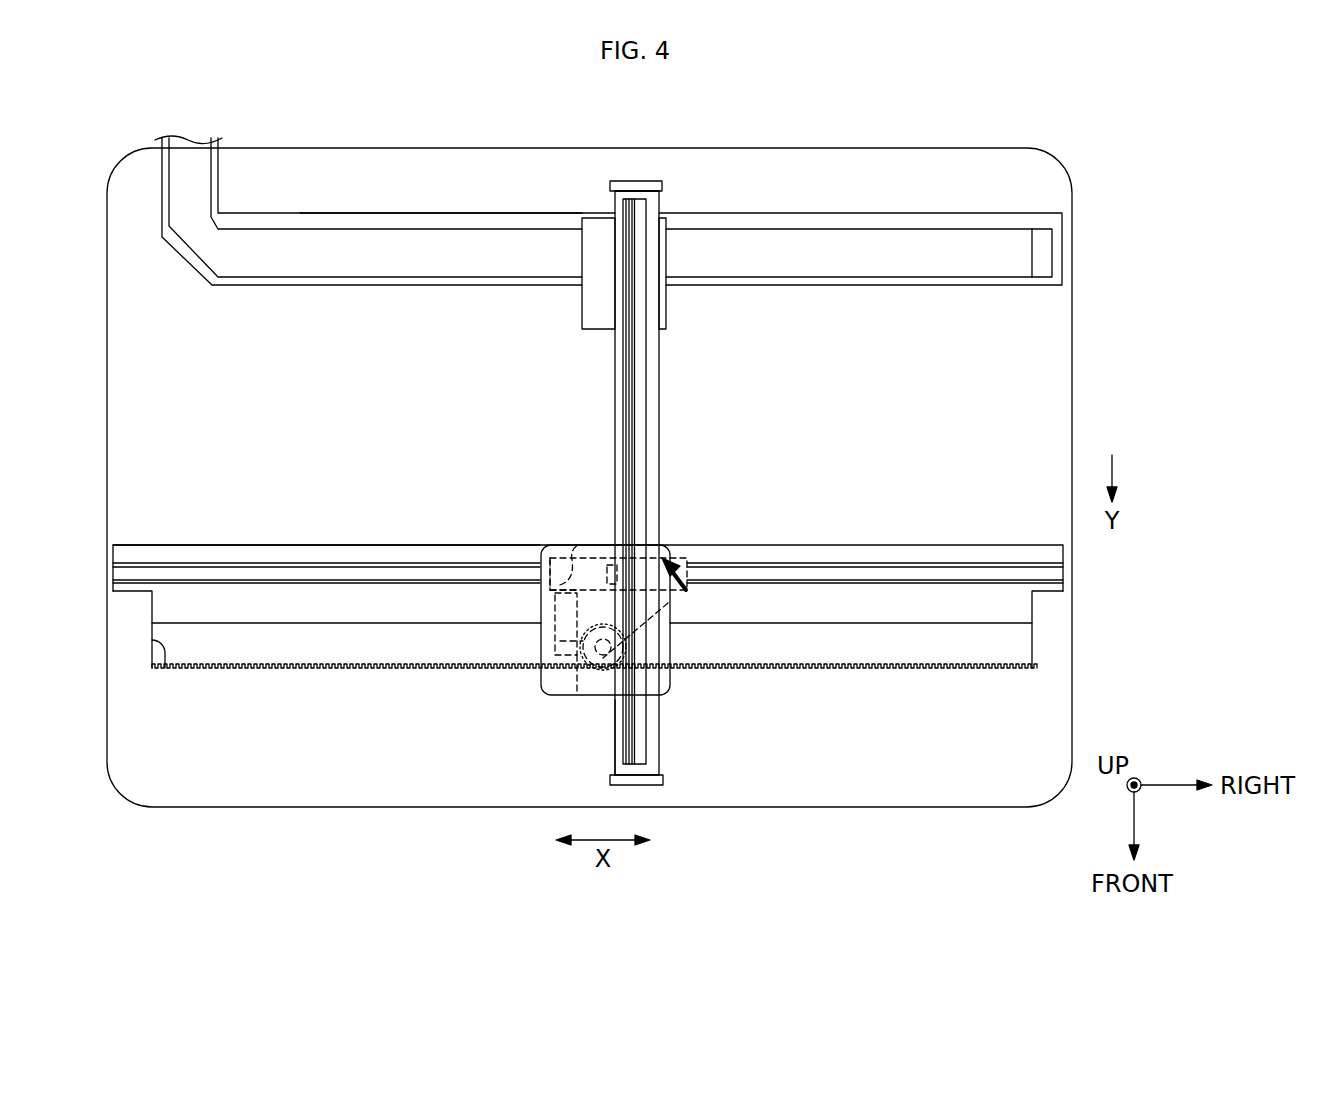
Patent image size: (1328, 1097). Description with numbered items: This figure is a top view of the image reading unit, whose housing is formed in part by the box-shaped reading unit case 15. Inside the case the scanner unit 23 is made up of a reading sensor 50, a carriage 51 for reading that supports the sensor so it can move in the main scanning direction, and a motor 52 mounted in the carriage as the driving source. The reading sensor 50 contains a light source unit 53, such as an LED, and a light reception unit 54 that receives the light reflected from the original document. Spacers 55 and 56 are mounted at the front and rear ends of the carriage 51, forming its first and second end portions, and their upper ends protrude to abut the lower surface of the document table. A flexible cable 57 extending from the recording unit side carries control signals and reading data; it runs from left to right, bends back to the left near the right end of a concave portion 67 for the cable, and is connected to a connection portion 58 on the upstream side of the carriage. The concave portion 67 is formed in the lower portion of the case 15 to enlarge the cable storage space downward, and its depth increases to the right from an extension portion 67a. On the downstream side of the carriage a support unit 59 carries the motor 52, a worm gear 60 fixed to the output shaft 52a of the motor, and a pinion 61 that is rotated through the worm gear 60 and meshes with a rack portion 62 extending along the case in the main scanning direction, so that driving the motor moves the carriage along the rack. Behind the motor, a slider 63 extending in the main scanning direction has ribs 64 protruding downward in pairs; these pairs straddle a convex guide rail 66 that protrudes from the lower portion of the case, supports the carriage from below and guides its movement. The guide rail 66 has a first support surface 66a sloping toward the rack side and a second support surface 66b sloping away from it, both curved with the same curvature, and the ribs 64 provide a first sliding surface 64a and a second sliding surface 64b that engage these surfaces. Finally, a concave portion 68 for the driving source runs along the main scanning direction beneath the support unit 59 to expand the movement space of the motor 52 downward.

The reading unit case 15 is at (1067, 685).
The scanner unit 23 is at (634, 164).
The reading sensor 50 is at (652, 447).
The carriage for reading 51 is at (614, 744).
The motor 52 is at (583, 668).
The output shaft 52a is at (560, 641).
The light source unit 53 is at (640, 376).
The light reception unit 54 is at (630, 406).
The spacer 55 is at (663, 778).
The spacer 56 is at (662, 186).
The flexible cable 57 is at (202, 172).
The connection portion 58 is at (666, 250).
The support unit 59 is at (672, 645).
The worm gear 60 is at (672, 605).
The pinion 61 is at (577, 697).
The rack portion 62 is at (436, 668).
The slider 63 is at (670, 560).
The ribs 64 is at (577, 560).
The first sliding surface 64a is at (536, 592).
The second sliding surface 64b is at (537, 558).
The guide rail 66 is at (437, 578).
The first support surface 66a is at (372, 591).
The second support surface 66b is at (372, 563).
The concave portion for the cable 67 is at (862, 222).
The extension portion 67a is at (512, 222).
The concave portion for the driving source 68 is at (161, 660).